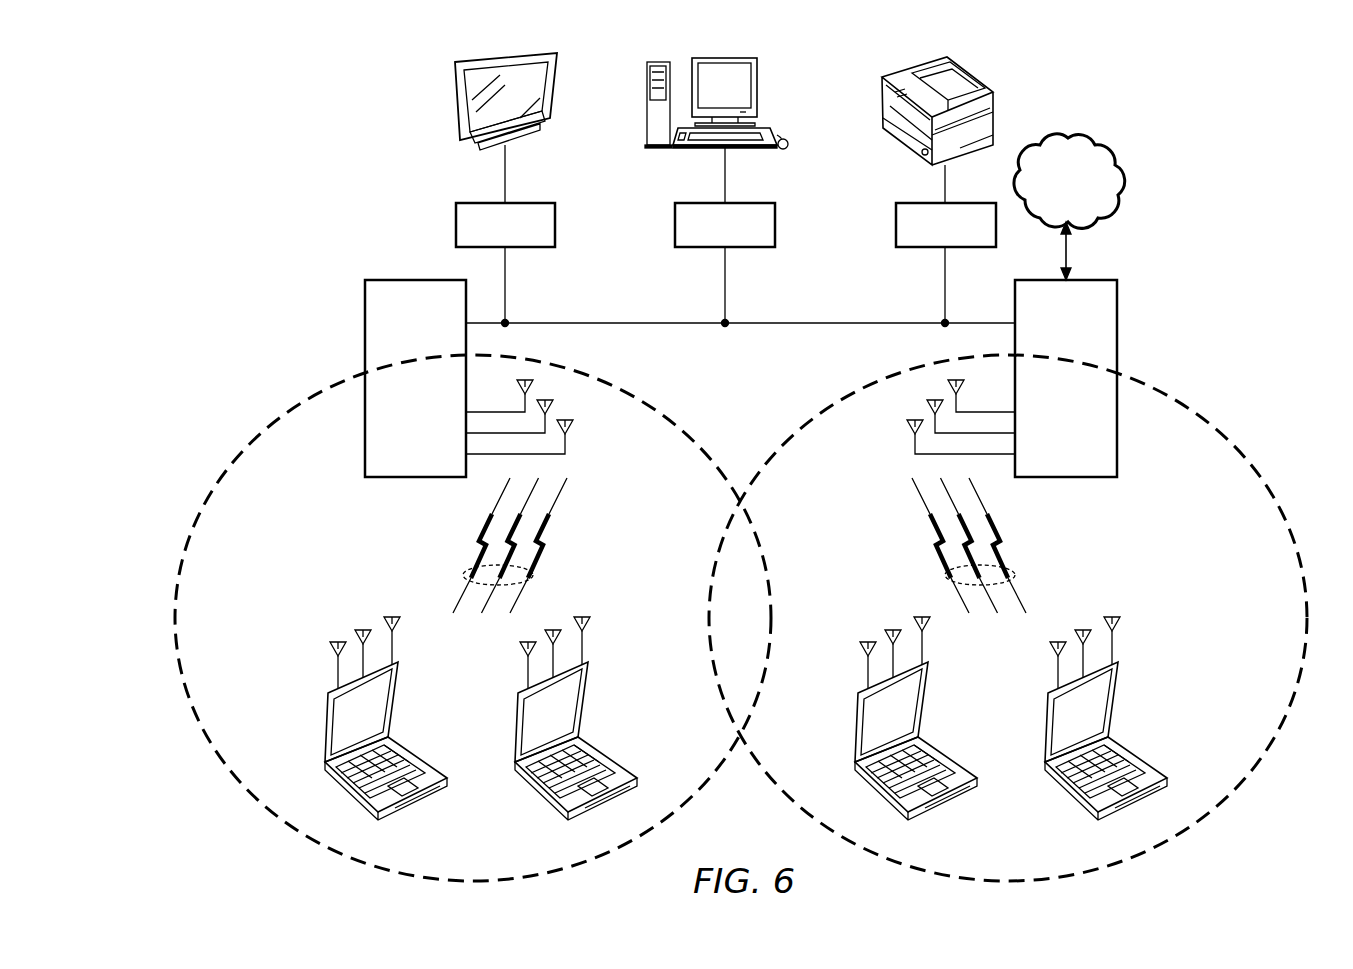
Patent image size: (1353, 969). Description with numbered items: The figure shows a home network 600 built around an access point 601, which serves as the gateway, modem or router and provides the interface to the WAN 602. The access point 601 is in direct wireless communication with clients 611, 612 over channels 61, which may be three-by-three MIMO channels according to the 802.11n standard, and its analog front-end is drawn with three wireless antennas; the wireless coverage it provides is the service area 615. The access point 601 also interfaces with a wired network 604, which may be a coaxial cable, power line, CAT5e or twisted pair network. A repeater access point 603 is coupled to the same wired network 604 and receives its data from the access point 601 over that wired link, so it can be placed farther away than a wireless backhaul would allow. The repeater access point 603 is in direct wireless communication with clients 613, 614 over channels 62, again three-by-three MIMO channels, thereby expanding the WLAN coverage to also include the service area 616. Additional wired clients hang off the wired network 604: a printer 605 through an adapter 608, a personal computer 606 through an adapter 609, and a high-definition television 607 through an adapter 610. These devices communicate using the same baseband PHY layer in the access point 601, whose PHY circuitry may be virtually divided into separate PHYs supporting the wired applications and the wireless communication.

The home network 600 is at (310, 98).
The access point 601 is at (1066, 478).
The WAN 602 is at (1120, 175).
The repeater access point 603 is at (412, 478).
The wired network 604 is at (768, 325).
The printer 605 is at (997, 110).
The personal computer 606 is at (760, 88).
The high-definition television 607 is at (457, 102).
The adapter 608 is at (896, 222).
The adapter 609 is at (675, 222).
The adapter 610 is at (456, 222).
The client 611 is at (928, 700).
The client 612 is at (1118, 700).
The client 613 is at (398, 700).
The client 614 is at (588, 700).
The service area 615 is at (1178, 404).
The service area 616 is at (293, 406).
The channels 61 is at (947, 575).
The channels 62 is at (533, 575).